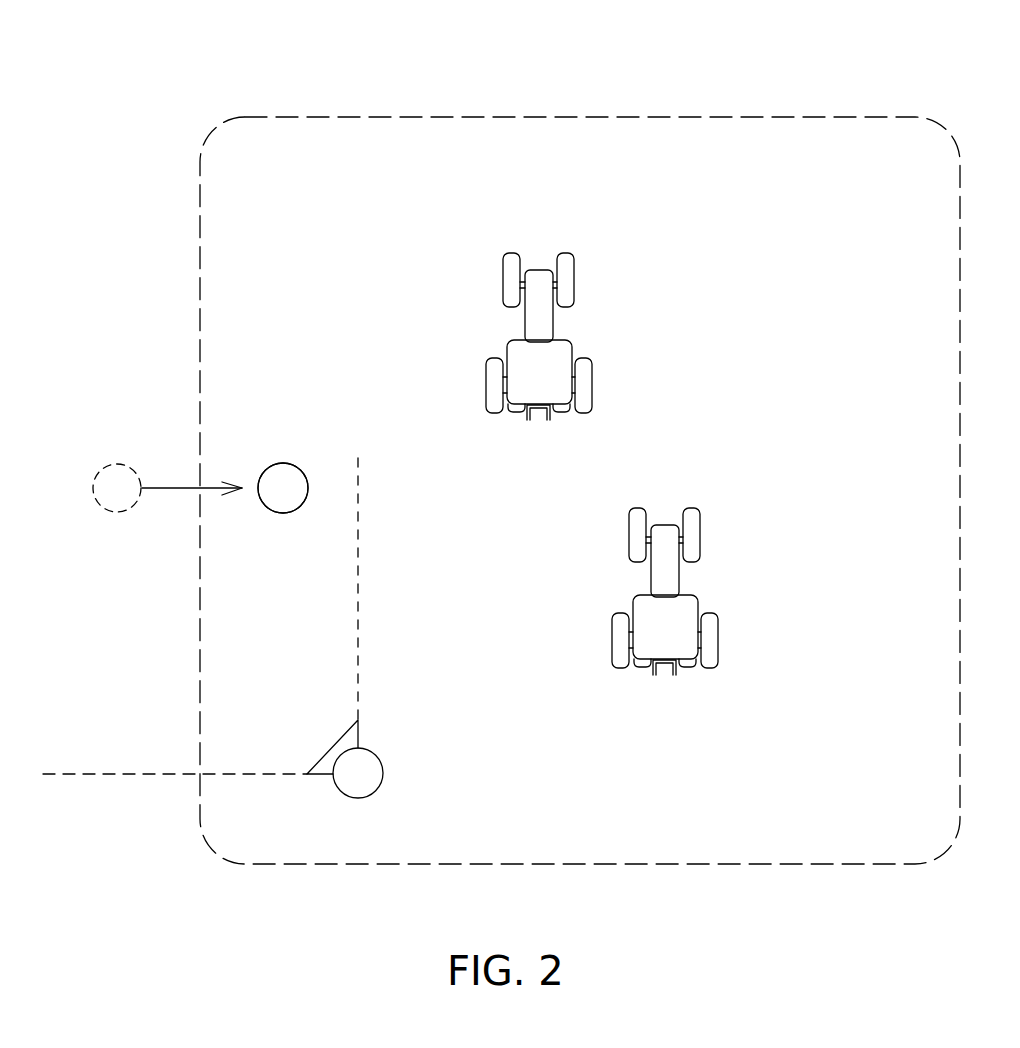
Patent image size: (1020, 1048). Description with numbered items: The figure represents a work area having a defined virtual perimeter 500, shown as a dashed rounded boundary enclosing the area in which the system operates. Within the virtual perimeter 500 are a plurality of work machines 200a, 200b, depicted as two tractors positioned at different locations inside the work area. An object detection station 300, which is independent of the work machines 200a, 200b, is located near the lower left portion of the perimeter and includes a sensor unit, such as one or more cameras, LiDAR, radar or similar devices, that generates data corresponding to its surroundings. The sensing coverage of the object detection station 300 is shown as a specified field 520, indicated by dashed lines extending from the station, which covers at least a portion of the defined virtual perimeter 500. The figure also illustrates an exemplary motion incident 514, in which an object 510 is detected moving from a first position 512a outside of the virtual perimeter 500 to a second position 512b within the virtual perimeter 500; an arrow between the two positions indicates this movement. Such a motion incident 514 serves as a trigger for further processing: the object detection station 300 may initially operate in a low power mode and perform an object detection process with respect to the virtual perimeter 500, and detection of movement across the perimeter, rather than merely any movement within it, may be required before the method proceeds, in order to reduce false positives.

The virtual perimeter 500 is at (340, 117).
The specified field 520 is at (310, 668).
The object detection station 300 is at (387, 762).
The object 510 is at (283, 463).
The first position 512a is at (108, 512).
The second position 512b is at (283, 513).
The motion incident 514 is at (192, 453).
The work machine 200a is at (588, 307).
The work machine 200b is at (715, 575).